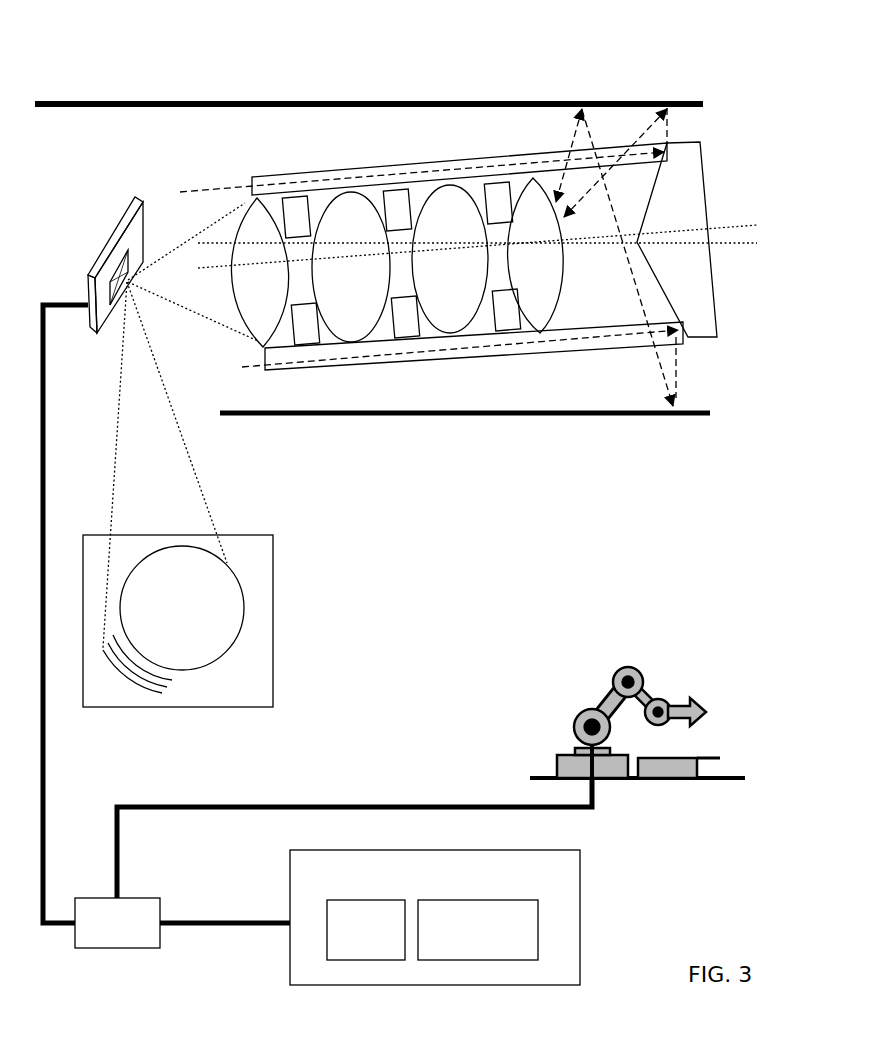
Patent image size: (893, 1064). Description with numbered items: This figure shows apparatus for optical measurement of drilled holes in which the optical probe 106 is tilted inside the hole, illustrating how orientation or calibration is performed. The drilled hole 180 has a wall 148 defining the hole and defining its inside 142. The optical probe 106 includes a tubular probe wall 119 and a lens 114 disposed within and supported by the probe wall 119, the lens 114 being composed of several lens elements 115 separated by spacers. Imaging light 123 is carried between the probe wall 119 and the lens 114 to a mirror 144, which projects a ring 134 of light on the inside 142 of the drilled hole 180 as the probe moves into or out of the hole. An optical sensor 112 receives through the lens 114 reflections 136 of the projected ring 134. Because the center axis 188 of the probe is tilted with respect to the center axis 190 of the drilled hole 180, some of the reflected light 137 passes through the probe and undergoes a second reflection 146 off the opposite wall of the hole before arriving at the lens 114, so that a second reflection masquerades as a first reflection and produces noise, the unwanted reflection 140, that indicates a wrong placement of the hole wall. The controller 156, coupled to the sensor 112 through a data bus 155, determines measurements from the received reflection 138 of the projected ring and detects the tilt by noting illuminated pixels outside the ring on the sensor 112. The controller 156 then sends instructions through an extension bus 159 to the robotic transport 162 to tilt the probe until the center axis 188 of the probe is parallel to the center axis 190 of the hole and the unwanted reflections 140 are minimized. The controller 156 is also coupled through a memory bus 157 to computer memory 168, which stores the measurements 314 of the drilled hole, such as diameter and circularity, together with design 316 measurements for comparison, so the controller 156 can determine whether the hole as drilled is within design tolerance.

The optical probe 106 is at (401, 503).
The optical sensor 112 is at (259, 480).
The lens 114 is at (216, 332).
The lens elements 115 is at (397, 262).
The probe wall 119 is at (567, 354).
The imaging light 123 is at (176, 189).
The ring of light 134 is at (679, 384).
The reflections 136 is at (655, 128).
The reflected light 137 is at (633, 256).
The received reflections 138 is at (247, 606).
The unwanted reflection 140 is at (118, 687).
The inside of the drilled hole 142 is at (456, 110).
The mirror 144 is at (665, 276).
The second reflection 146 is at (572, 152).
The wall 148 is at (330, 96).
The data bus 155 is at (65, 614).
The controller 156 is at (117, 923).
The memory bus 157 is at (225, 911).
The extension bus 159 is at (354, 838).
The robotic transport 162 is at (630, 714).
The memory 168 is at (435, 917).
The drilled hole 180 is at (415, 95).
The center axis of the optical probe 188 is at (478, 236).
The center axis of the drilled hole 190 is at (478, 252).
The measurements 314 is at (478, 930).
The design 316 is at (366, 930).